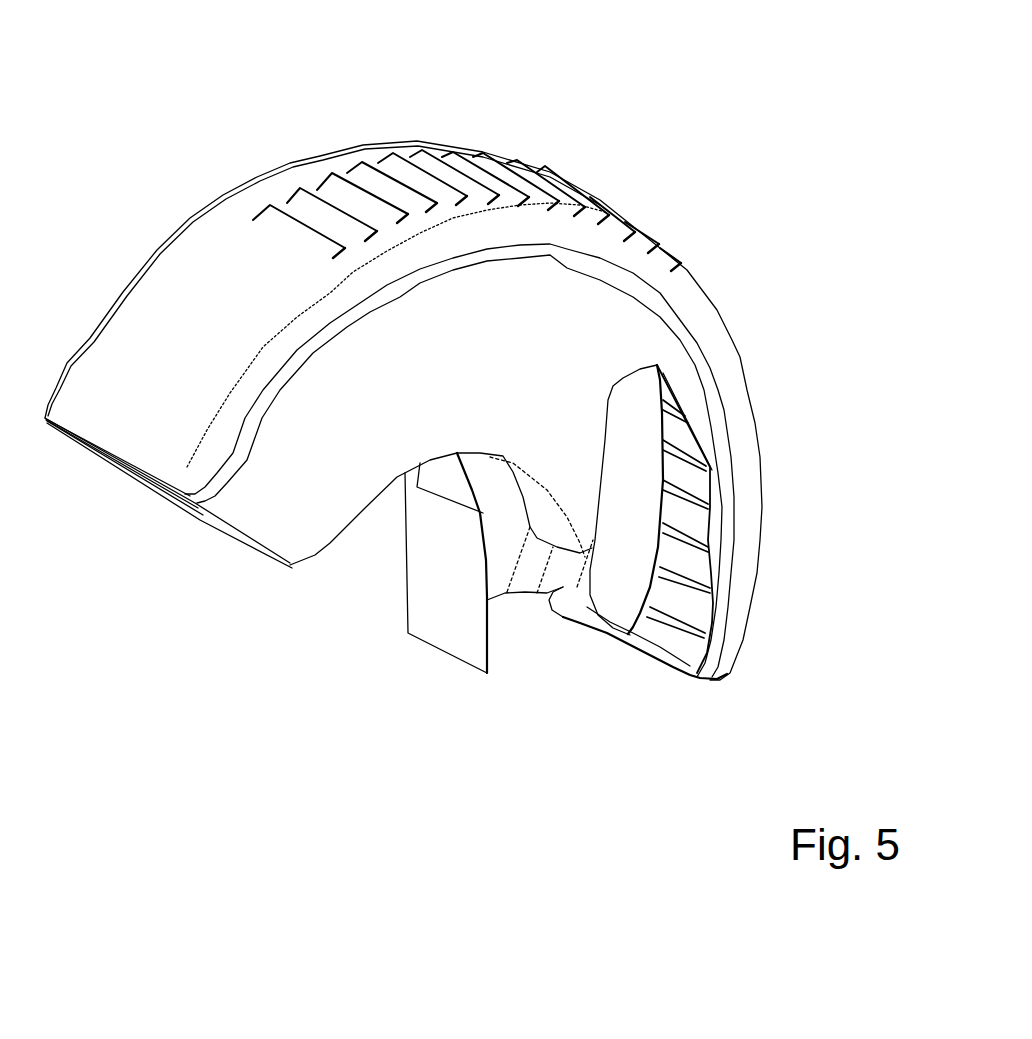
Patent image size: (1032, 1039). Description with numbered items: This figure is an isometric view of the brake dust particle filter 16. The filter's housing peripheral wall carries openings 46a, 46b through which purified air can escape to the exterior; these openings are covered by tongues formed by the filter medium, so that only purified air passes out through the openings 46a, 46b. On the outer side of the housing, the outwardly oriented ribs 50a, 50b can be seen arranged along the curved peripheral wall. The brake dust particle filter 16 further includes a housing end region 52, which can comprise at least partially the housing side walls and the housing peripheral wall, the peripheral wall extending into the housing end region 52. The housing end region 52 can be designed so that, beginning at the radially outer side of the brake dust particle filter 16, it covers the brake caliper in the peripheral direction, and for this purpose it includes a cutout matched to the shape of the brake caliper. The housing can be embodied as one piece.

The brake dust particle filter 16 is at (465, 340).
The opening 46a is at (379, 293).
The opening 46b is at (437, 264).
The outwardly oriented rib 50a is at (318, 141).
The outwardly oriented rib 50b is at (529, 148).
The housing end region 52 is at (460, 410).